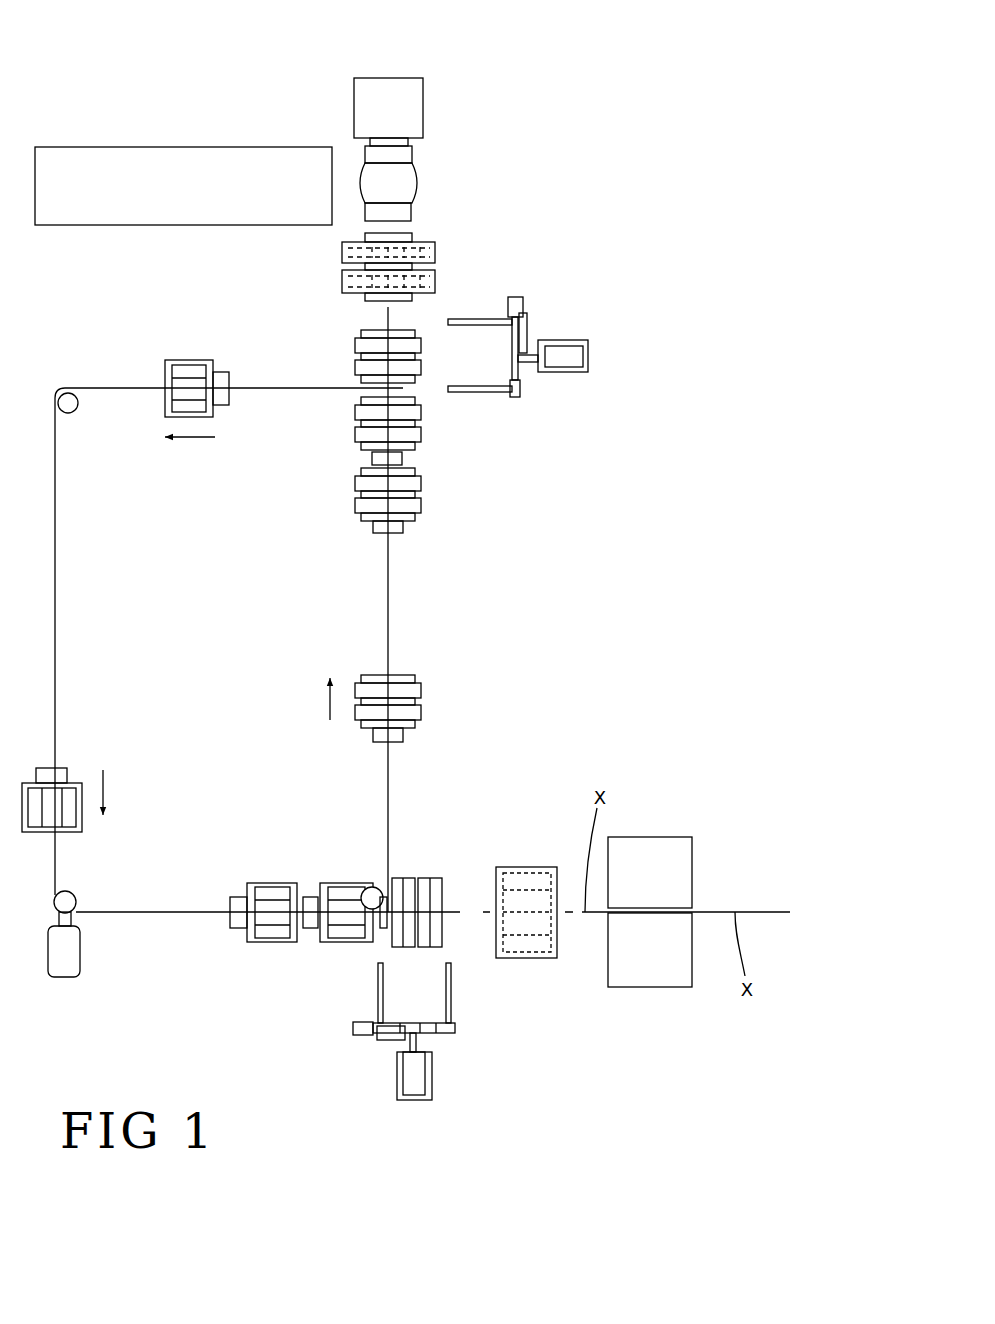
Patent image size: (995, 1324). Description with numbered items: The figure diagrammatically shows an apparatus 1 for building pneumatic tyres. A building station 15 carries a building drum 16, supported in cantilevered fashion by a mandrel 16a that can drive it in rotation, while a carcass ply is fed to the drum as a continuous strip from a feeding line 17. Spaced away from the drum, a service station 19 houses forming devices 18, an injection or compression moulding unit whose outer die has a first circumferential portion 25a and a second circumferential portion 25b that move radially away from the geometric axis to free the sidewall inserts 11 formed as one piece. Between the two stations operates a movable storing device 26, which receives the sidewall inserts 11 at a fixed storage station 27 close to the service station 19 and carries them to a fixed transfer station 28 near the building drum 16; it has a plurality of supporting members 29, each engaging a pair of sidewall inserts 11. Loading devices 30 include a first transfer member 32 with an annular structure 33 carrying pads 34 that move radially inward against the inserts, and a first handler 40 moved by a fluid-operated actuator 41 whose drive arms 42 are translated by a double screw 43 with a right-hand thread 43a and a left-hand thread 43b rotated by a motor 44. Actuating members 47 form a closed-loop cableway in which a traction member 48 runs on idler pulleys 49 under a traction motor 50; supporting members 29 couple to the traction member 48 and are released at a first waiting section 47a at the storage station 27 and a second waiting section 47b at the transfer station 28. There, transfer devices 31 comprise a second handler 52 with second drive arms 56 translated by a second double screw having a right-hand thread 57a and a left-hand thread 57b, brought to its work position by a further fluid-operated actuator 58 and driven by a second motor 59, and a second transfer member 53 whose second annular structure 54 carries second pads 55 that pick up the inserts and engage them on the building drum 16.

The apparatus 1 is at (626, 574).
The sidewall inserts 11 is at (407, 878).
The building station 15 is at (425, 114).
The building drum 16 is at (408, 182).
The mandrel 16a is at (365, 98).
The feeding line 17 is at (180, 170).
The forming devices 18 is at (692, 905).
The service station 19 is at (692, 900).
The first circumferential portion 25a is at (635, 845).
The second circumferential portion 25b is at (656, 975).
The movable storing device 26 is at (446, 690).
The storage station 27 is at (270, 982).
The transfer station 28 is at (444, 434).
The supporting members 29 is at (453, 873).
The loading devices 30 is at (416, 1062).
The transfer devices 31 is at (446, 282).
The first transfer member 32 is at (537, 843).
The annular structure 33 is at (520, 867).
The pads 34 is at (540, 925).
The first handler 40 is at (378, 1040).
The fluid-operated actuator 41 is at (415, 1087).
The drive arms 42 is at (380, 993).
The double screw 43 is at (402, 1035).
The right-hand thread 43a is at (390, 1024).
The left-hand thread 43b is at (428, 1035).
The motor 44 is at (365, 1024).
The actuating members 47 is at (241, 663).
The first waiting section 47a is at (345, 842).
The second waiting section 47b is at (332, 456).
The traction member 48 is at (120, 388).
The idler pulleys 49 is at (68, 413).
The traction motor 50 is at (66, 958).
The second handler 52 is at (521, 406).
The second transfer member 53 is at (446, 250).
The second annular structure 54 is at (342, 280).
The second pads 55 is at (372, 283).
The second drive arms 56 is at (468, 388).
The right-hand thread 57a is at (518, 373).
The left-hand thread 57b is at (527, 333).
The further fluid-operated actuator 58 is at (575, 358).
The second motor 59 is at (520, 303).